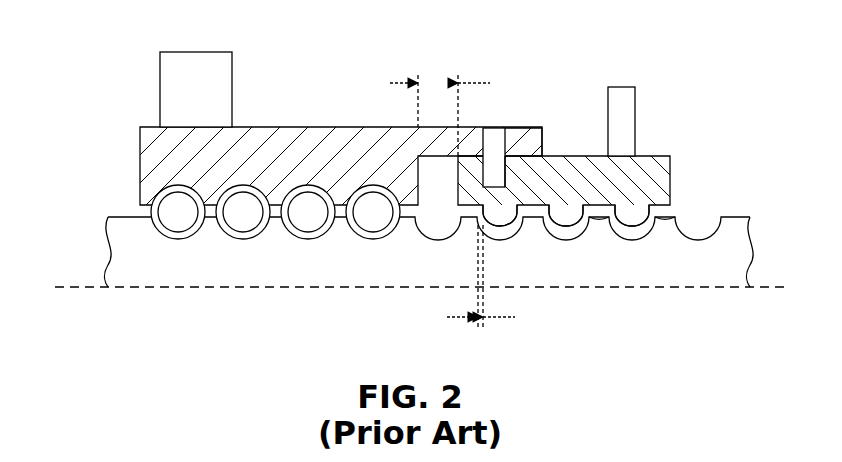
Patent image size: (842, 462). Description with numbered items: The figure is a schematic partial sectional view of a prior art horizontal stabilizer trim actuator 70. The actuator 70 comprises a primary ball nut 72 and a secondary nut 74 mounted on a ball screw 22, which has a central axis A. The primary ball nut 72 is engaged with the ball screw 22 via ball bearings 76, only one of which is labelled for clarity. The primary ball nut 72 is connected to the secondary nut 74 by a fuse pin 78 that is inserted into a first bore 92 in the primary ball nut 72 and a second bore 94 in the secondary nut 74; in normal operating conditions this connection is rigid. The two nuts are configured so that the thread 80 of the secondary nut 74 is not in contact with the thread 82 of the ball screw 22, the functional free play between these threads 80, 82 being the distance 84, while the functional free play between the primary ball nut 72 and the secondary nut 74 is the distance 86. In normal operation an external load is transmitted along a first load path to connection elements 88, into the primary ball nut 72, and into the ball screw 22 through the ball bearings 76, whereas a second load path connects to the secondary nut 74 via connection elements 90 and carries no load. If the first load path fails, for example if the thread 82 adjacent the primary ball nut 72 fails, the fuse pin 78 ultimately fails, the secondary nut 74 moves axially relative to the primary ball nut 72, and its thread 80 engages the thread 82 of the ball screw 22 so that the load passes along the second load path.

The ball screw 22 is at (235, 278).
The central axis A is at (62, 287).
The horizontal stabilizer trim actuator 70 is at (270, 97).
The primary ball nut 72 is at (150, 147).
The secondary nut 74 is at (650, 178).
The ball bearings 76 is at (178, 207).
The fuse pin 78 is at (492, 132).
The thread of the secondary nut 80 is at (625, 218).
The thread of the ball screw 82 is at (635, 238).
The distance 84 is at (455, 318).
The distance 86 is at (402, 78).
The connection elements 88 is at (168, 90).
The connection elements 90 is at (637, 120).
The first bore 92 is at (545, 127).
The second bore 94 is at (507, 170).